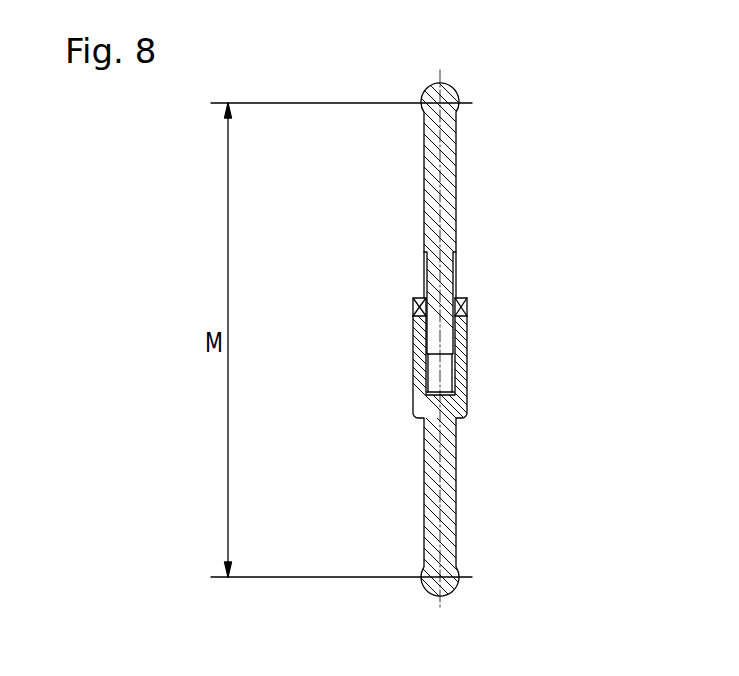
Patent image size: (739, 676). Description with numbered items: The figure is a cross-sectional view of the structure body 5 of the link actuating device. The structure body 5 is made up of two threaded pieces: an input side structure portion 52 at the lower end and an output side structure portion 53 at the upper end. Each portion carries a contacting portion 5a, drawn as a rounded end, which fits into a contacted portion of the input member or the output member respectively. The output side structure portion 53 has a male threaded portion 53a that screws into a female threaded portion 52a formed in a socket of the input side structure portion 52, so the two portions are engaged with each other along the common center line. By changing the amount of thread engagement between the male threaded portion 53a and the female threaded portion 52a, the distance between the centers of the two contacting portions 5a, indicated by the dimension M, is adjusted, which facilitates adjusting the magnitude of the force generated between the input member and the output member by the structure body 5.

The structure body 5 is at (472, 345).
The contacting portion 5a is at (452, 89).
The input side structure portion 52 is at (455, 462).
The female threaded portion 52a is at (428, 380).
The output side structure portion 53 is at (456, 228).
The male threaded portion 53a is at (425, 280).